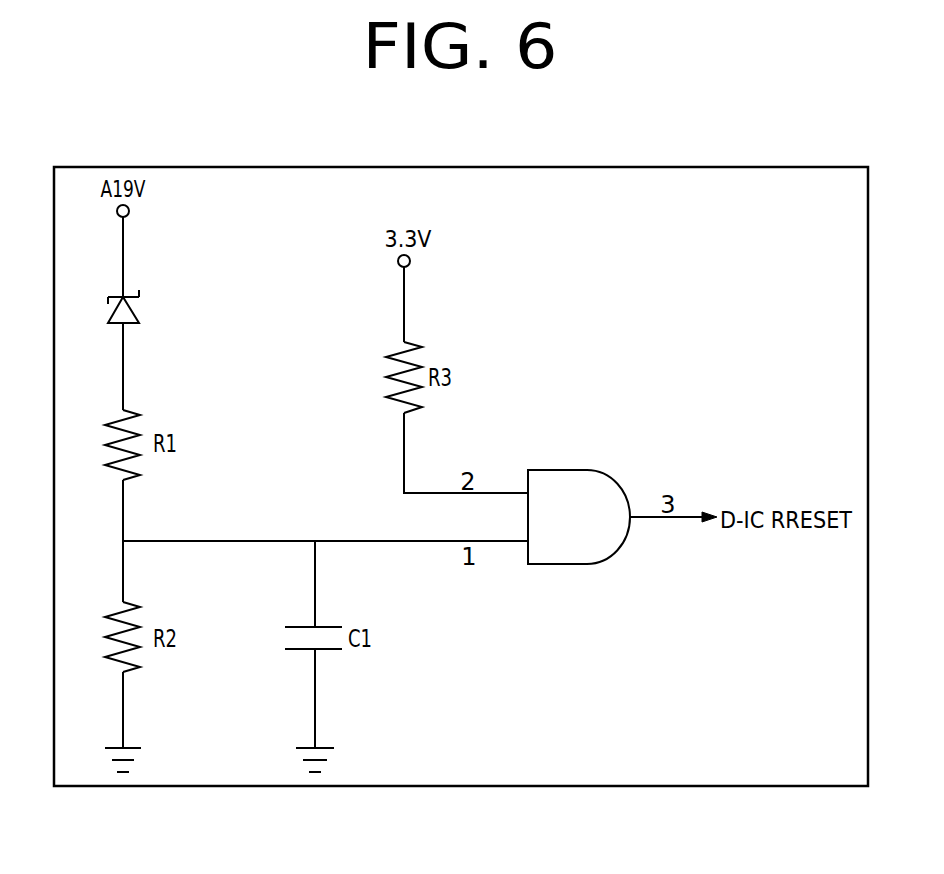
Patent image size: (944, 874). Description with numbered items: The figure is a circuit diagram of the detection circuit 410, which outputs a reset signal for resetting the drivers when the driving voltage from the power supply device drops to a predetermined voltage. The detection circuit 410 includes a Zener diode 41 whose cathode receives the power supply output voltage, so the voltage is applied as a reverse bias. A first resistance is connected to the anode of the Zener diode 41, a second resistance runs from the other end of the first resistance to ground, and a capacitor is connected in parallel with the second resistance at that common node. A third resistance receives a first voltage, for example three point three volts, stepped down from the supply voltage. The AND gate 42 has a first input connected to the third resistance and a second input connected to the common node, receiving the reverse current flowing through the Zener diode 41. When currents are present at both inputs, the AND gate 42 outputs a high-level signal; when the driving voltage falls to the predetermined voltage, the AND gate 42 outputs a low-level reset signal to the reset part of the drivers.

The detection circuit 410 is at (816, 167).
The Zener diode 41 is at (110, 311).
The AND gate 42 is at (575, 565).